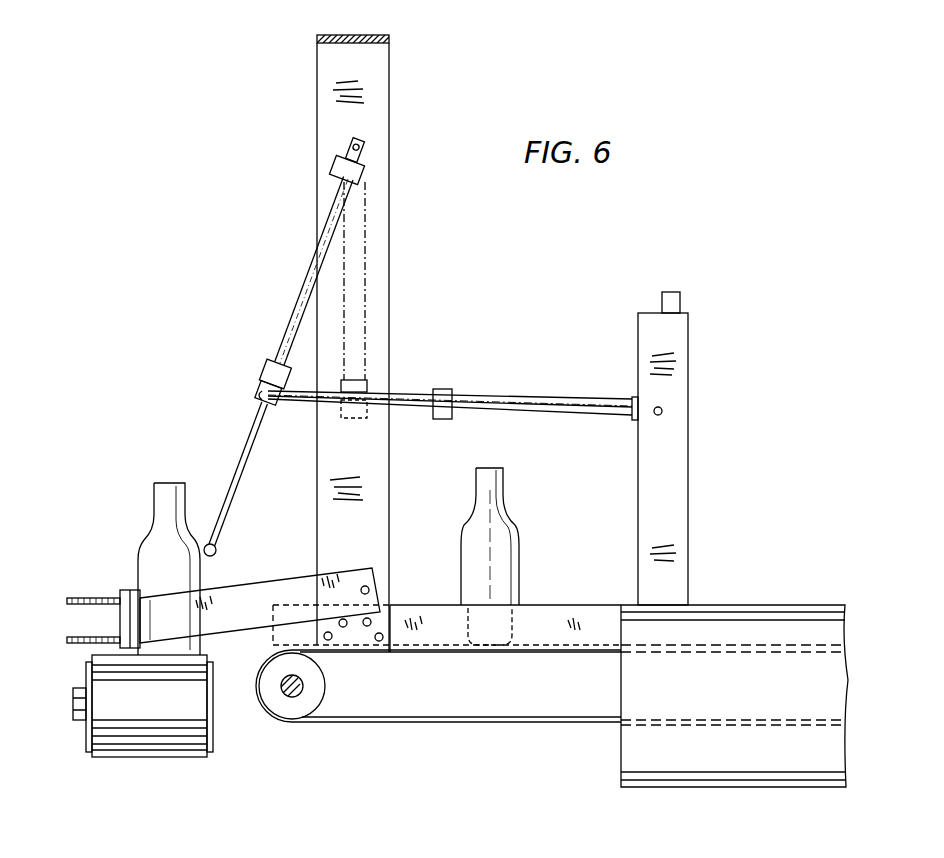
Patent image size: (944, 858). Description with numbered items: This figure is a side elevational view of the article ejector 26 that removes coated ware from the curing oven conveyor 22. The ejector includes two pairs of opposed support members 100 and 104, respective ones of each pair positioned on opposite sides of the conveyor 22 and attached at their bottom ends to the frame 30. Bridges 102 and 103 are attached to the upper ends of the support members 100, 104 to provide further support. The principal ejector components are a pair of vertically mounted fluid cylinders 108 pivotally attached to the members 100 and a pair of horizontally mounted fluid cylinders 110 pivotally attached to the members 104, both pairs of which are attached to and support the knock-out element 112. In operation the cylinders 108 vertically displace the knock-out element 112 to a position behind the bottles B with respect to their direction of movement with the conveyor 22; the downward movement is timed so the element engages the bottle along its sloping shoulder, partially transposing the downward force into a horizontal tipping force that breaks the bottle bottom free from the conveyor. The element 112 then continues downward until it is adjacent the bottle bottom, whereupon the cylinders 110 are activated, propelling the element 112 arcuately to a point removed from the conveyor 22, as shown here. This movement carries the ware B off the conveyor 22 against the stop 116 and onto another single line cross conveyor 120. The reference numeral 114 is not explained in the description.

The support member 100 is at (383, 122).
The bridge 102 is at (378, 37).
The bridge 103 is at (683, 310).
The support member 104 is at (685, 468).
The vertically mounted fluid cylinder 108 is at (290, 312).
The horizontally mounted fluid cylinder 110 is at (556, 378).
The knock-out element 112 is at (216, 553).
The pusher plate 114 is at (272, 600).
The stop 116 is at (124, 590).
The single line cross conveyor 120 is at (180, 758).
The conveyor 22 is at (447, 727).
The article ejector 26 is at (592, 311).
The frame 30 is at (625, 766).
The bottle B is at (172, 487).